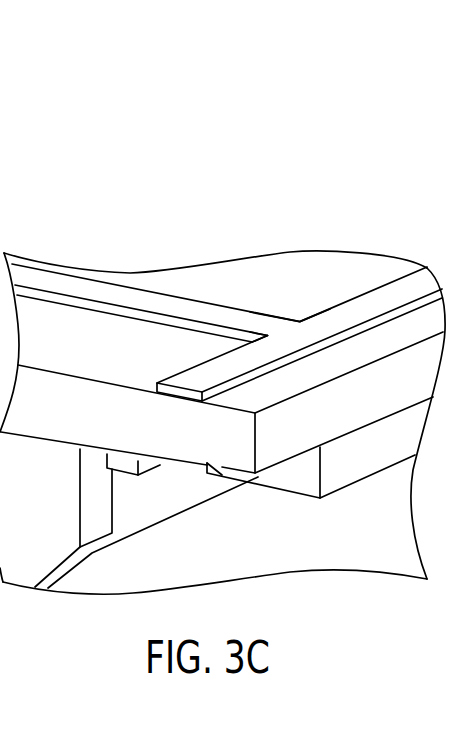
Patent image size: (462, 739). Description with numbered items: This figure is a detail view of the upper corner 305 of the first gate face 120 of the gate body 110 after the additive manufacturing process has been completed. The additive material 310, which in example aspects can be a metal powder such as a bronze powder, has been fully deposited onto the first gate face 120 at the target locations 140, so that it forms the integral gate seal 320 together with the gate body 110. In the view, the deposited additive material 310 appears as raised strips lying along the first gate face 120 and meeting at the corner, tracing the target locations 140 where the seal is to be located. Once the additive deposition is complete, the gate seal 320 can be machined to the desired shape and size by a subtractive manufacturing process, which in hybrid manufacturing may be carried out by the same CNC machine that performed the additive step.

The upper corner 305 is at (224, 334).
The gate body 110 is at (268, 276).
The first gate face 120 is at (225, 517).
The target locations 140 is at (227, 291).
The additive material 310 is at (365, 306).
The integral gate seal 320 is at (253, 323).